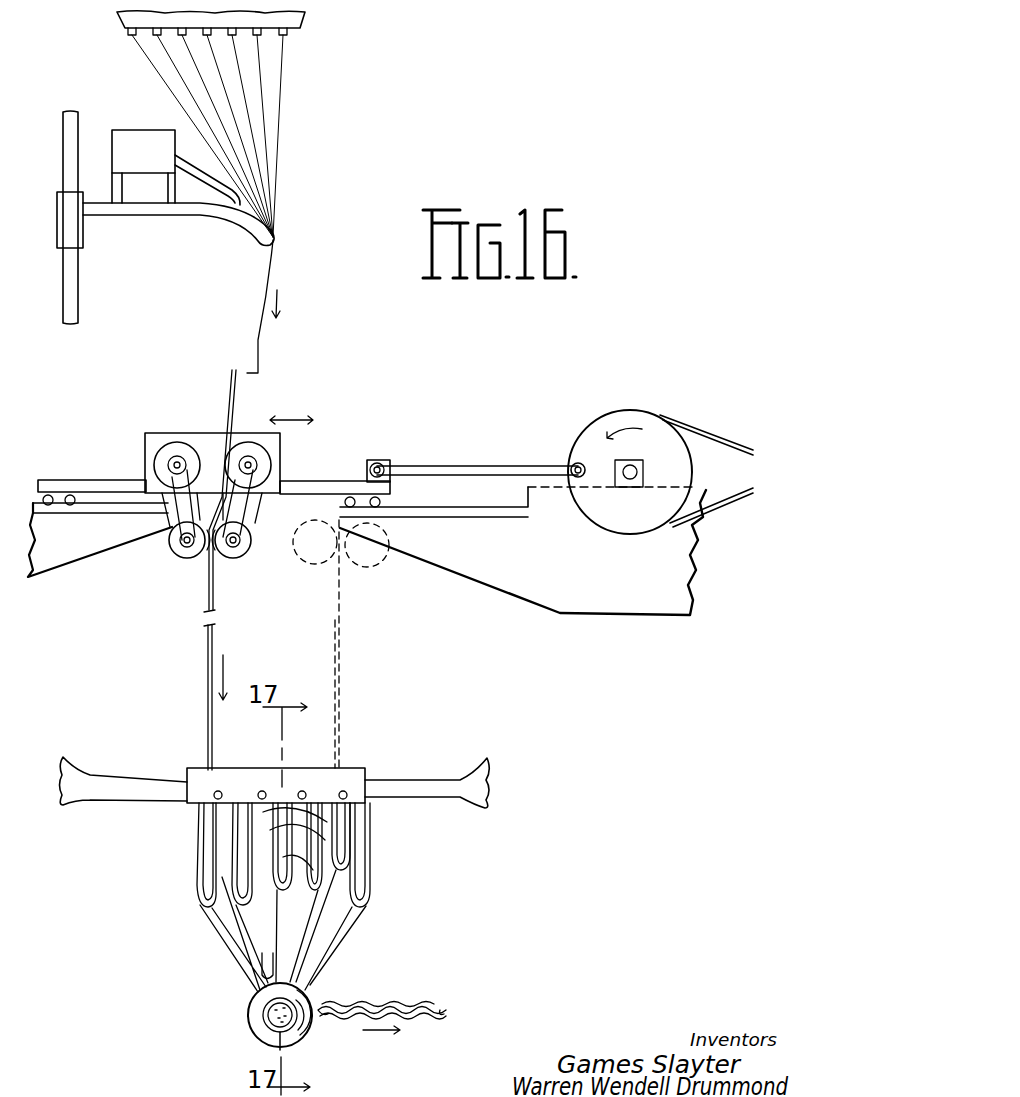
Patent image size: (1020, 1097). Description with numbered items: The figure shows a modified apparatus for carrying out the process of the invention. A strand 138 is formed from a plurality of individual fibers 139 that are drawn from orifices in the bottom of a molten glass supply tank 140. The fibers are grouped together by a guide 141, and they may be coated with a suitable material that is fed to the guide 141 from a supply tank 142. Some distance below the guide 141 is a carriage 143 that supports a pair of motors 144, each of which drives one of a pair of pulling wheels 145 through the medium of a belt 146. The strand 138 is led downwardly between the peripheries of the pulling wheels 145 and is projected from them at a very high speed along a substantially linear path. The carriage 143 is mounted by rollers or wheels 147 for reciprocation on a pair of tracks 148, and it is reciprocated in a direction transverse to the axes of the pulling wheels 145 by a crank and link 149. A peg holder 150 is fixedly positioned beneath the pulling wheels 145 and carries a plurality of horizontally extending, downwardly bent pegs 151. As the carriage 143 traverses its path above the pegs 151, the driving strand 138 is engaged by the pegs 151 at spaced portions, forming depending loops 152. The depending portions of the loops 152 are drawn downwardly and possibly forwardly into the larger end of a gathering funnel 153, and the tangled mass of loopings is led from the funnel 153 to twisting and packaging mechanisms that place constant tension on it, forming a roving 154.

The strand 138 is at (213, 601).
The individual fibers 139 is at (284, 143).
The molten glass supply tank 140 is at (305, 20).
The guide 141 is at (253, 229).
The supply tank 142 is at (182, 130).
The carriage 143 is at (342, 470).
The motors 144 is at (192, 440).
The pulling wheels 145 is at (258, 554).
The belt 146 is at (173, 546).
The rollers or wheels 147 is at (118, 470).
The tracks 148 is at (118, 508).
The crank and link 149 is at (587, 407).
The peg holder 150 is at (358, 770).
The pegs 151 is at (212, 790).
The depending loops 152 is at (372, 893).
The gathering funnel 153 is at (307, 993).
The roving 154 is at (383, 1003).